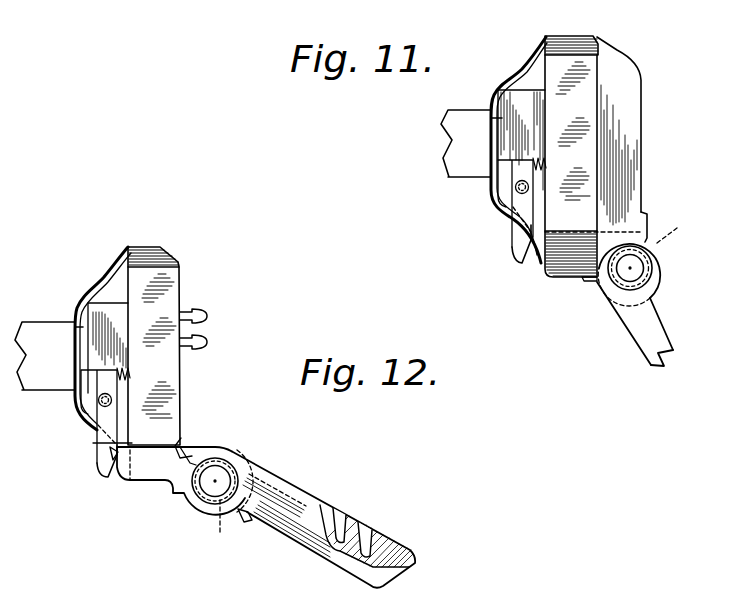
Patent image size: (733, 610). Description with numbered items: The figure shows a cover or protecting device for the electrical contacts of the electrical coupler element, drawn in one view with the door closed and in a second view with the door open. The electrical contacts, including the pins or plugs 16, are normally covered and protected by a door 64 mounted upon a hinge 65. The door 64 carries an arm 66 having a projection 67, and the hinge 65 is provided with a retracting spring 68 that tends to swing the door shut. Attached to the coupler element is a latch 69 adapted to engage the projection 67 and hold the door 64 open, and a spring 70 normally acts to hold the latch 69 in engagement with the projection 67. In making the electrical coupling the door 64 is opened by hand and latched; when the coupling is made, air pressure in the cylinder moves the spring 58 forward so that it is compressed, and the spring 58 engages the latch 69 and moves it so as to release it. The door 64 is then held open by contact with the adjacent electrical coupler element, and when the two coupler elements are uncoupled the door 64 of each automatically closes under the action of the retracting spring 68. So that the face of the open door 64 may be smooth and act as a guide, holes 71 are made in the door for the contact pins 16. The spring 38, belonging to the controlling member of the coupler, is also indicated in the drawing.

In FIG. 12, the pins or plugs 16 is at (207, 341).
In FIG. 11, the spring 38 is at (563, 65).
In FIG. 12, the spring 38 is at (170, 292).
In FIG. 11, the spring 58 is at (529, 63).
In FIG. 12, the spring 58 is at (77, 363).
In FIG. 11, the door 64 is at (634, 103).
In FIG. 12, the door 64 is at (285, 528).
In FIG. 11, the hinge 65 is at (650, 268).
In FIG. 12, the hinge 65 is at (215, 497).
In FIG. 11, the arm 66 is at (661, 325).
In FIG. 12, the arm 66 is at (156, 463).
In FIG. 11, the projection 67 is at (660, 366).
In FIG. 12, the projection 67 is at (110, 453).
In FIG. 11, the retracting spring 68 is at (650, 218).
In FIG. 12, the retracting spring 68 is at (246, 521).
In FIG. 11, the latch 69 is at (518, 230).
In FIG. 12, the latch 69 is at (97, 432).
In FIG. 11, the spring 70 is at (545, 167).
In FIG. 12, the spring 70 is at (131, 373).
In FIG. 12, the holes 71 is at (367, 540).